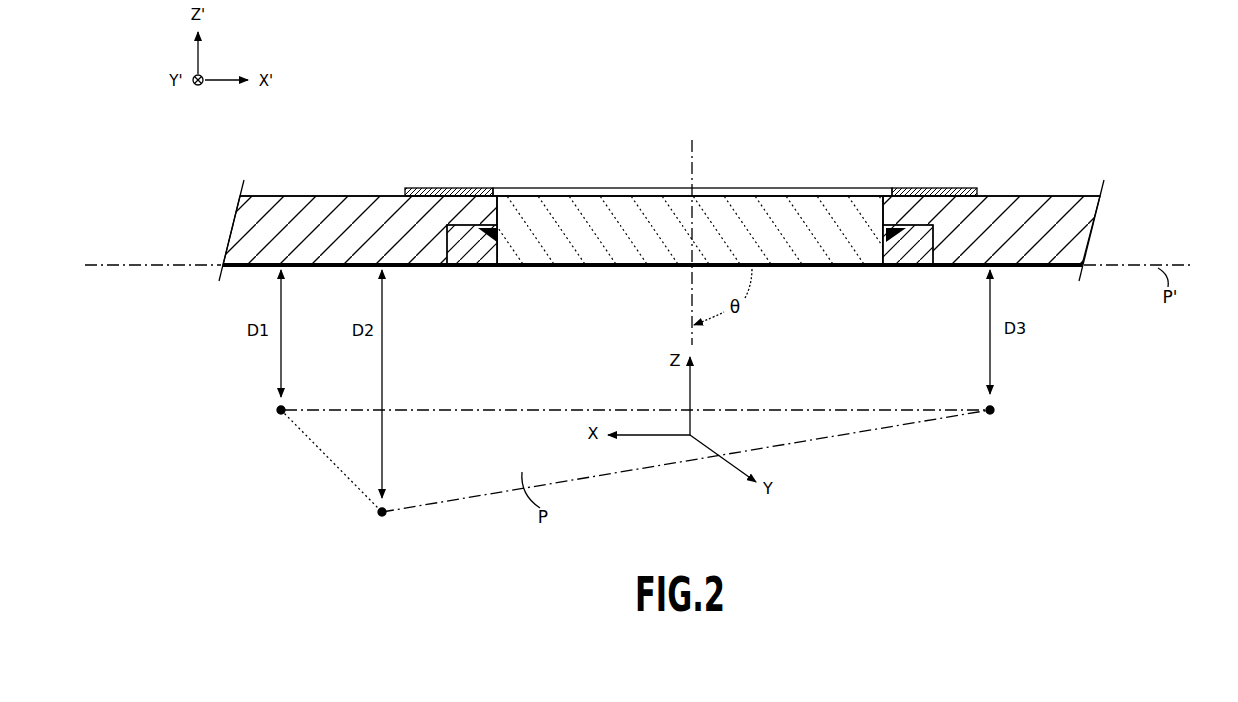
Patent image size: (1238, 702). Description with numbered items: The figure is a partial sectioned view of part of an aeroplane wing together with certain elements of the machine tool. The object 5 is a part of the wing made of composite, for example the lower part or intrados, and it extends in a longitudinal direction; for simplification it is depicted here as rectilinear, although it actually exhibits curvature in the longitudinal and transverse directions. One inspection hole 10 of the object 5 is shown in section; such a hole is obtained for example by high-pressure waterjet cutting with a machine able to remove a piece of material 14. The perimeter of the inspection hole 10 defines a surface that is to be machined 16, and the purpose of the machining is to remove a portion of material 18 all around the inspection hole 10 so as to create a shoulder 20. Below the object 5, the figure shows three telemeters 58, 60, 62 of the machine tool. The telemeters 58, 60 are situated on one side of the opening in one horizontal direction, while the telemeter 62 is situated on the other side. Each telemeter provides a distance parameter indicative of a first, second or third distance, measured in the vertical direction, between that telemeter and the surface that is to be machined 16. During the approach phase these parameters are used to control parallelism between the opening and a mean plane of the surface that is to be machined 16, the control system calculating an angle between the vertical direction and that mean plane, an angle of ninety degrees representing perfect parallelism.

The object 5 is at (1035, 217).
The inspection hole 10 is at (574, 276).
The piece of material 14 is at (640, 222).
The surface that is to be machined 16 is at (427, 267).
The portion of material 18 is at (446, 235).
The shoulder 20 is at (513, 250).
The telemeter 58 is at (276, 412).
The telemeter 60 is at (381, 518).
The telemeter 62 is at (996, 413).